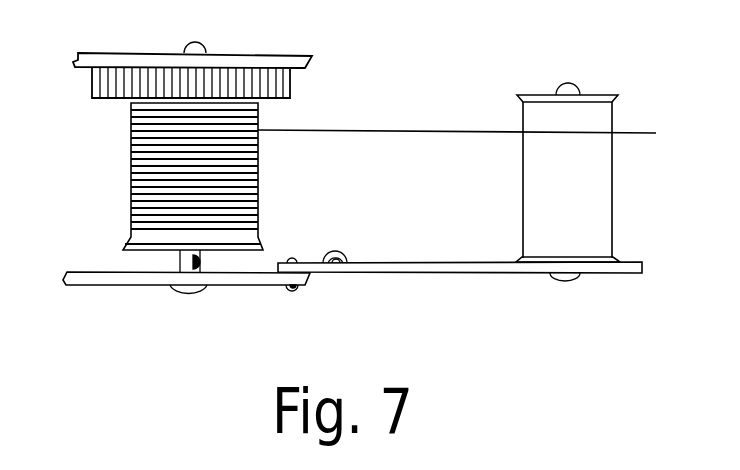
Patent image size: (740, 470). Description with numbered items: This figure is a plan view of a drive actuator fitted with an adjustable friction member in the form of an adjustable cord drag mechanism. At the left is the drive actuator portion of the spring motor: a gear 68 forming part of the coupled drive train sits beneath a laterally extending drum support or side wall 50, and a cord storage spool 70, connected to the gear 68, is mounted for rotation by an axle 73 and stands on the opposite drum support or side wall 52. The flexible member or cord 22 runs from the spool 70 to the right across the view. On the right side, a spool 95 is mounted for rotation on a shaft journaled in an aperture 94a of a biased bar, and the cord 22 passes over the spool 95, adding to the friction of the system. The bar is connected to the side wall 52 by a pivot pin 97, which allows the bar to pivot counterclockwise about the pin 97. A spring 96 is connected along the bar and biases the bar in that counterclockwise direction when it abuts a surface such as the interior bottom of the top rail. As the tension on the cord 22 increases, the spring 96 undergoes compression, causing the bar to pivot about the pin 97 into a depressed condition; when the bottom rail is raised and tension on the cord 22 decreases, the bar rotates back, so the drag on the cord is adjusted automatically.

The cord 22 is at (415, 131).
The side wall 50 is at (265, 58).
The side wall 52 is at (118, 283).
The gear 68 is at (140, 82).
The cord storage spool 70 is at (140, 183).
The axle 73 is at (180, 264).
The aperture 94a is at (589, 78).
The spool 95 is at (601, 203).
The spring 96 is at (340, 253).
The pivot pin 97 is at (295, 290).